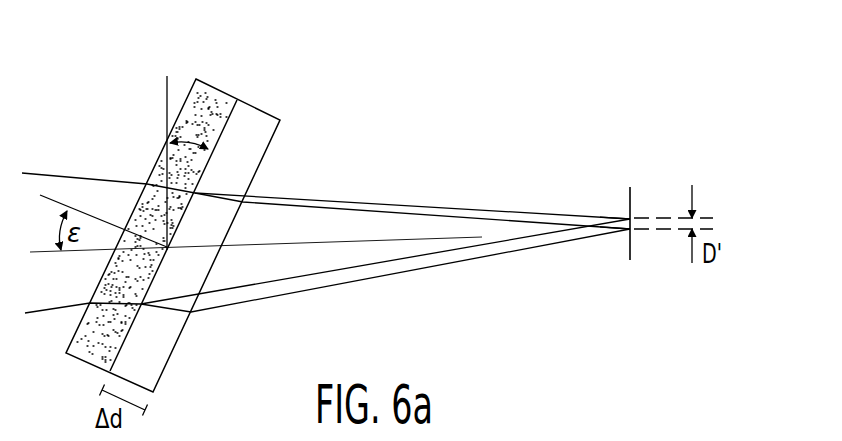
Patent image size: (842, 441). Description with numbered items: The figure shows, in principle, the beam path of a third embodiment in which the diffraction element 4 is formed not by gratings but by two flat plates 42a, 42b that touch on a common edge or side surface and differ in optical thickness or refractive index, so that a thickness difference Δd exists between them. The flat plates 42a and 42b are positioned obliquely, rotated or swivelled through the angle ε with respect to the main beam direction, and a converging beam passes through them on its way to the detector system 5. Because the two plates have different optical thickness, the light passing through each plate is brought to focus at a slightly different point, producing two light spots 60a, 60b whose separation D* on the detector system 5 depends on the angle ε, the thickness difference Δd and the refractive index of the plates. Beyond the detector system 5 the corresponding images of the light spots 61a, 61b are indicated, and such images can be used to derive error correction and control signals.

The diffraction element 4 is at (223, 92).
The flat plate 42a is at (205, 90).
The flat plate 42b is at (252, 157).
The detector system 5 is at (632, 197).
The light spot 60a is at (615, 218).
The light spot 60b is at (643, 230).
The image of light spot 61a is at (637, 218).
The image of light spot 61b is at (625, 232).